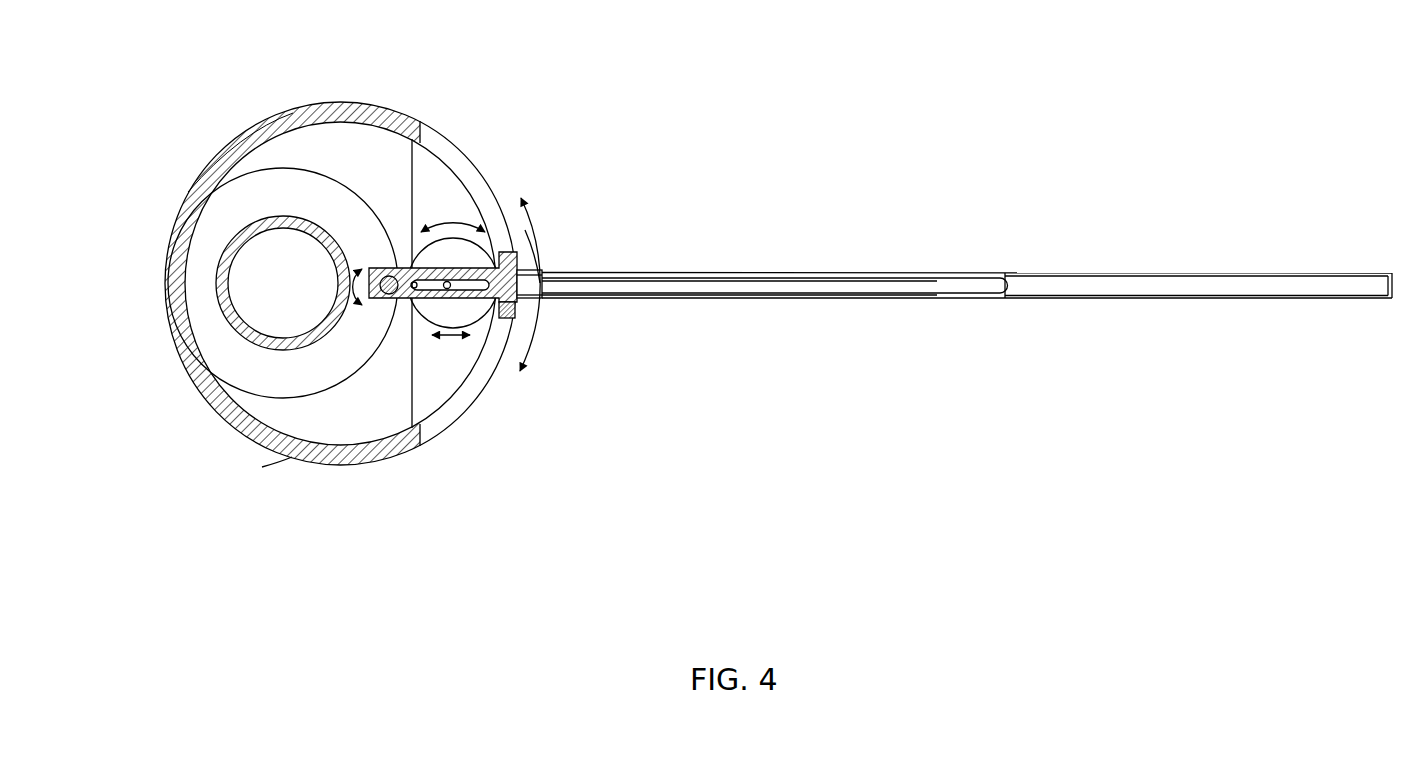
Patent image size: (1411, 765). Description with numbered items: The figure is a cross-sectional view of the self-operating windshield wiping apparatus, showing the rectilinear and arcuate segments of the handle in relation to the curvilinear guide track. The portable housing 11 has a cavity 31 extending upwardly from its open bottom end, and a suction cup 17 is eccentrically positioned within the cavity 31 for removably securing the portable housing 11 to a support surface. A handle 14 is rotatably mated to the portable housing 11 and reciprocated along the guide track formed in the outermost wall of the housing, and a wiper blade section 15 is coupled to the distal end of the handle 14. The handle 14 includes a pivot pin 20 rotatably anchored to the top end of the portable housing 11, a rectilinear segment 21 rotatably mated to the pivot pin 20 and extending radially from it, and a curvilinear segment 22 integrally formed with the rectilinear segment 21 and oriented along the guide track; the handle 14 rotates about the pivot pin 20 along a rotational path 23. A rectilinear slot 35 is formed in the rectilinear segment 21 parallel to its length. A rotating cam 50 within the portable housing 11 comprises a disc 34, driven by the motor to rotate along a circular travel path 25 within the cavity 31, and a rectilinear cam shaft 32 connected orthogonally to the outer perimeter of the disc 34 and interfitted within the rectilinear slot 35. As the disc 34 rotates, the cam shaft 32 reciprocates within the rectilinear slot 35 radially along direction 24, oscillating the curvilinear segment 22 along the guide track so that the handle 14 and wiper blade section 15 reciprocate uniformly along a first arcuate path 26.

The portable housing 11 is at (440, 432).
The handle 14 is at (634, 284).
The wiper blade section 15 is at (1140, 282).
The suction cup 17 is at (217, 288).
The pivot pin 20 is at (416, 241).
The rectilinear segment 21 is at (415, 300).
The curvilinear segment 22 is at (516, 375).
The rotational path 23 is at (259, 466).
The direction 24 is at (450, 337).
The circular travel path 25 is at (488, 236).
The first arcuate path 26 is at (533, 231).
The cavity 31 is at (323, 147).
The rectilinear cam shaft 32 is at (412, 234).
The disc 34 is at (517, 303).
The rectilinear slot 35 is at (519, 270).
The rotating cam 50 is at (408, 310).